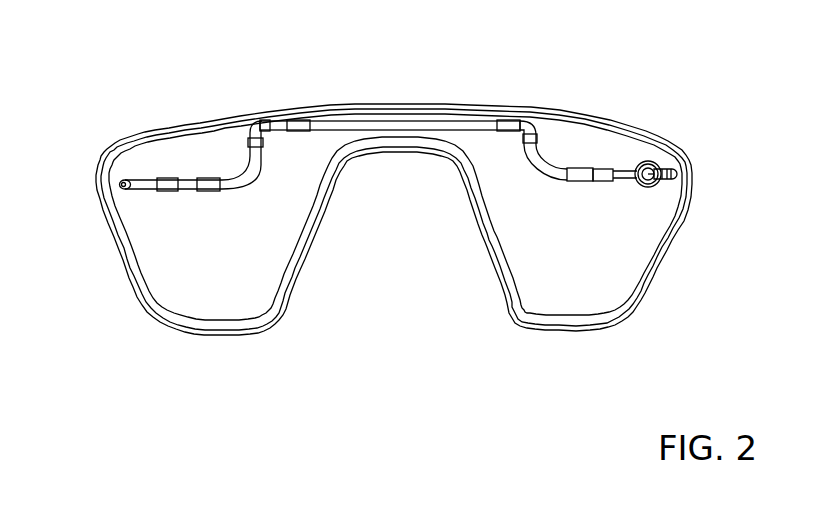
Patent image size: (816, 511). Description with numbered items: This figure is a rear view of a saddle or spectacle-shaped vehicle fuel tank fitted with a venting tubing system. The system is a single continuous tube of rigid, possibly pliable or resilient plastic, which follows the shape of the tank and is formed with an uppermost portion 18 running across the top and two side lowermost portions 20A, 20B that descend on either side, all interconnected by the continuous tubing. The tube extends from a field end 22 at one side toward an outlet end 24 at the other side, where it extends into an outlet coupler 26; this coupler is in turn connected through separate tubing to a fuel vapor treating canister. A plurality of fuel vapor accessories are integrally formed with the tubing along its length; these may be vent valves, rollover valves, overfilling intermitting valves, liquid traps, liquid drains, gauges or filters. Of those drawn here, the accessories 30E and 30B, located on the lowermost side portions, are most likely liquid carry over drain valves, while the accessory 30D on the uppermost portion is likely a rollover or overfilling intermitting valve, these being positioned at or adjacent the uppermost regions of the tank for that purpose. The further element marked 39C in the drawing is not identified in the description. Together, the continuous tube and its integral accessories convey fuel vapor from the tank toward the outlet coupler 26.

The uppermost portion 18 is at (393, 124).
The side lowermost portion 20A is at (549, 158).
The side lowermost portion 20B is at (242, 168).
The field end 22 is at (119, 184).
The outlet end 24 is at (655, 160).
The outlet coupler 26 is at (675, 228).
The fuel vapor accessory 30B is at (188, 199).
The fuel vapor accessory 30D is at (507, 133).
The fuel vapor accessory 30E is at (585, 186).
The electronic module 39C is at (300, 133).